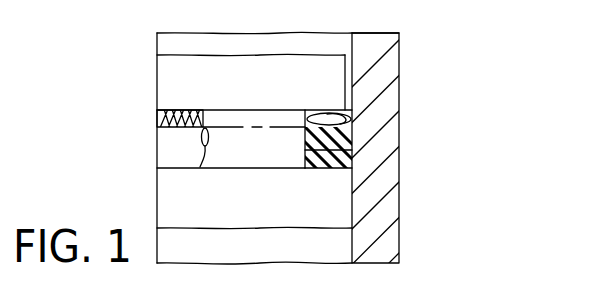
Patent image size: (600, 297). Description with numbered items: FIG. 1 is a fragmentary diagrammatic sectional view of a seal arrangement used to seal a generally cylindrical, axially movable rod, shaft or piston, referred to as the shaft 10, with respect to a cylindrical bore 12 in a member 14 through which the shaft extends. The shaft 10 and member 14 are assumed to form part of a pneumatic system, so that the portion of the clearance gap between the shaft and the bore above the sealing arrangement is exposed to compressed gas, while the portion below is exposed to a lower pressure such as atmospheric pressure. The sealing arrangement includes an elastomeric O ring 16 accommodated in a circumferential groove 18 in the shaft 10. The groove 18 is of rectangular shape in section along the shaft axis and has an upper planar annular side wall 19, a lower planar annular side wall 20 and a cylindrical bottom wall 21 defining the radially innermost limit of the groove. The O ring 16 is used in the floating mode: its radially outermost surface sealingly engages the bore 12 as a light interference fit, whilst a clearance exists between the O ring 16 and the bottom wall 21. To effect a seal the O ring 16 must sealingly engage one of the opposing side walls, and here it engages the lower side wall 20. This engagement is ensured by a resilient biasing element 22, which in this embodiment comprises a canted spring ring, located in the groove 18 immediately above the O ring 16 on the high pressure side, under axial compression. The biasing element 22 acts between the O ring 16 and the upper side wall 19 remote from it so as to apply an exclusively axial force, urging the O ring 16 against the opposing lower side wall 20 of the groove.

The shaft 10 is at (190, 208).
The cylindrical bore 12 is at (356, 37).
The member 14 is at (388, 78).
The O ring 16 is at (340, 140).
The circumferential groove 18 is at (305, 168).
The upper side wall 19 is at (352, 119).
The lower side wall 20 is at (330, 160).
The bottom wall 21 is at (335, 150).
The biasing element 22 is at (160, 117).